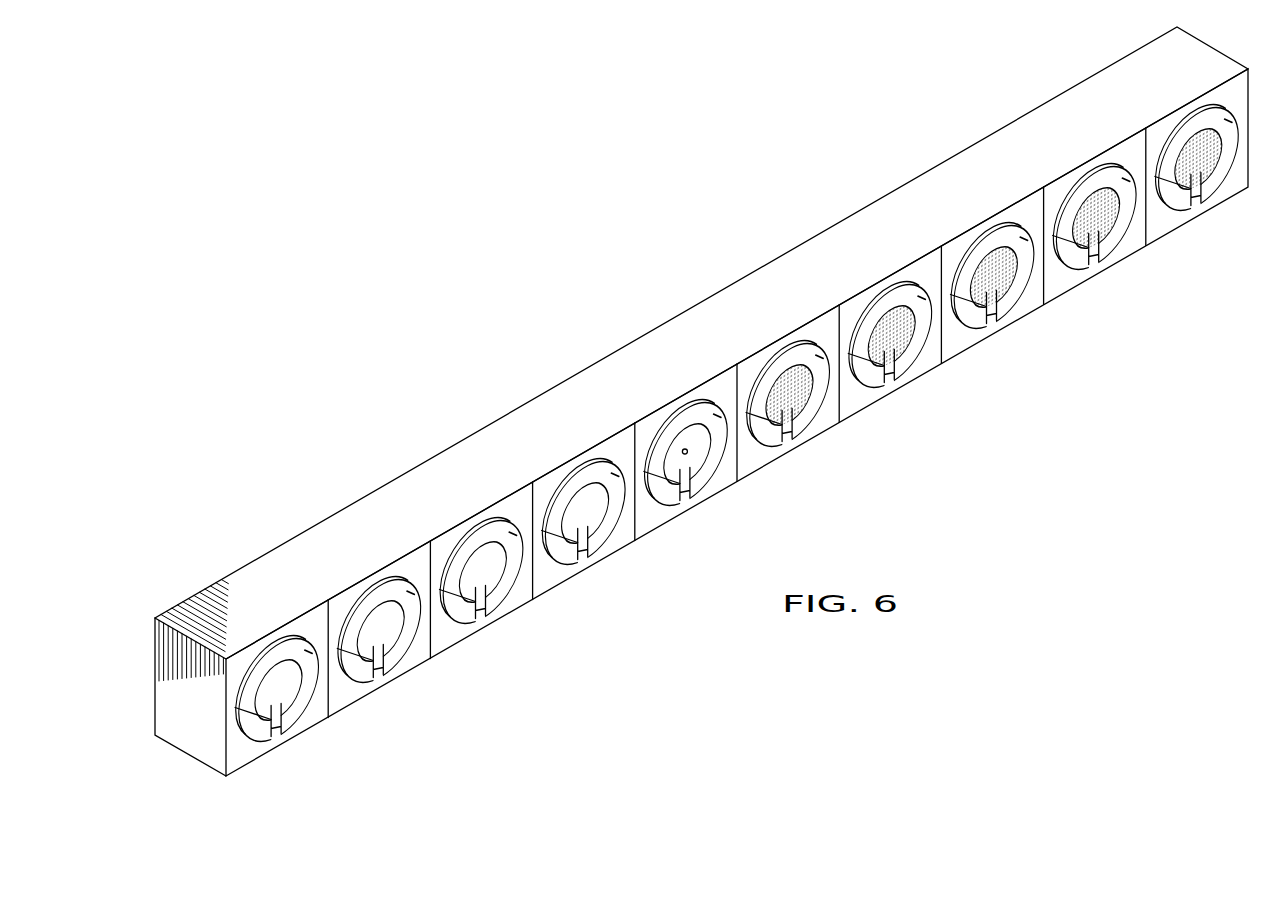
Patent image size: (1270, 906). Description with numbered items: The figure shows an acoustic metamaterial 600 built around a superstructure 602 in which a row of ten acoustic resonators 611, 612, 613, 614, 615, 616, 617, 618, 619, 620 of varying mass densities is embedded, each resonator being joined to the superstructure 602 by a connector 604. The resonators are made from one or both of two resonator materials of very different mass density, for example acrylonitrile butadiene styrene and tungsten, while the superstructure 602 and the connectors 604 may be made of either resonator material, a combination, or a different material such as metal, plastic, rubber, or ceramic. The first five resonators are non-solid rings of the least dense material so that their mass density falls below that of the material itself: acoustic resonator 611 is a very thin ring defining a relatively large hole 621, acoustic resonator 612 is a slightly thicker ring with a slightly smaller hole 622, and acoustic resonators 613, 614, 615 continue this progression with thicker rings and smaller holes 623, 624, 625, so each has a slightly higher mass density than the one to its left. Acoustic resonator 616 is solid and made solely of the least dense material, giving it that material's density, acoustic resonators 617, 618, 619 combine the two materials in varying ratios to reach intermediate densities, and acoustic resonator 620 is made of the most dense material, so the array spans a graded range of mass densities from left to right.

The acoustic metamaterial 600 is at (701, 401).
The superstructure 602 is at (603, 377).
The connectors 604 is at (758, 486).
The acoustic resonator 611 is at (276, 669).
The acoustic resonator 612 is at (378, 610).
The acoustic resonator 613 is at (481, 551).
The acoustic resonator 614 is at (583, 492).
The acoustic resonator 615 is at (685, 433).
The acoustic resonator 616 is at (787, 374).
The acoustic resonator 617 is at (889, 315).
The acoustic resonator 618 is at (992, 256).
The acoustic resonator 619 is at (1094, 197).
The acoustic resonator 620 is at (1196, 139).
The hole 621 is at (321, 707).
The hole 622 is at (423, 648).
The hole 623 is at (525, 589).
The hole 624 is at (628, 530).
The hole 625 is at (730, 472).